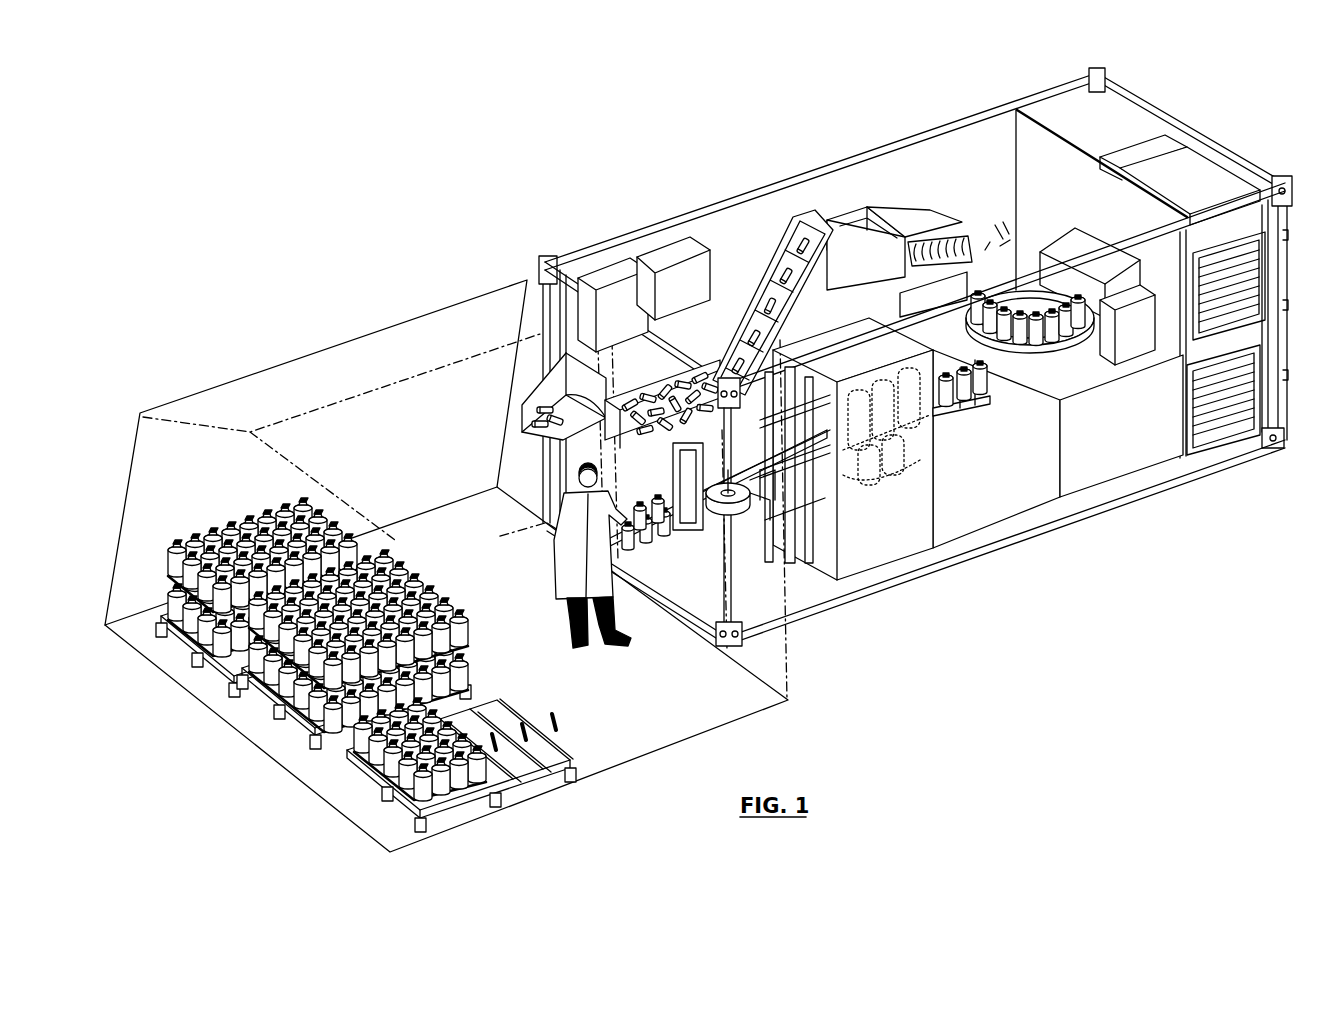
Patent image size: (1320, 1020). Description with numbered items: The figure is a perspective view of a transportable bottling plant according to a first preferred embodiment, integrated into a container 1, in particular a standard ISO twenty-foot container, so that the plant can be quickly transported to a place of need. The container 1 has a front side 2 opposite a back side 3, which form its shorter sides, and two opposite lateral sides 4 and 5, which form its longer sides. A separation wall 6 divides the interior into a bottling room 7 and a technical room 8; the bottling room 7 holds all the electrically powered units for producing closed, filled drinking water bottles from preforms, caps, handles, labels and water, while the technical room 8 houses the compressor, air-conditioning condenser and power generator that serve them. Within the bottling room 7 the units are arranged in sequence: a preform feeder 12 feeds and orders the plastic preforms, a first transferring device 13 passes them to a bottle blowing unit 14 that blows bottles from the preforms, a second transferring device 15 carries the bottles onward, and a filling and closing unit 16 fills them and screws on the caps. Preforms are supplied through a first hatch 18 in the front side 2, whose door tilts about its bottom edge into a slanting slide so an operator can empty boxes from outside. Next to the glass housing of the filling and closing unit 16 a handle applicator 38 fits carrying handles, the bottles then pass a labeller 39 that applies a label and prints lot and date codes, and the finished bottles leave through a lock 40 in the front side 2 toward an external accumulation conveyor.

The container 1 is at (640, 213).
The front side 2 is at (517, 302).
The back side 3 is at (1212, 127).
The lateral side 4 is at (880, 135).
The lateral side 5 is at (1012, 558).
The separation wall 6 is at (1038, 162).
The bottling room 7 is at (823, 307).
The technical room 8 is at (1133, 148).
The preform feeder 12 is at (778, 226).
The first transferring device 13 is at (993, 218).
The bottle blowing unit 14 is at (1147, 400).
The second transferring device 15 is at (985, 365).
The filling and closing unit 16 is at (887, 505).
The first hatch 18 is at (540, 425).
The handle applicator 38 is at (805, 490).
The labeller 39 is at (712, 528).
The lock 40 is at (690, 515).